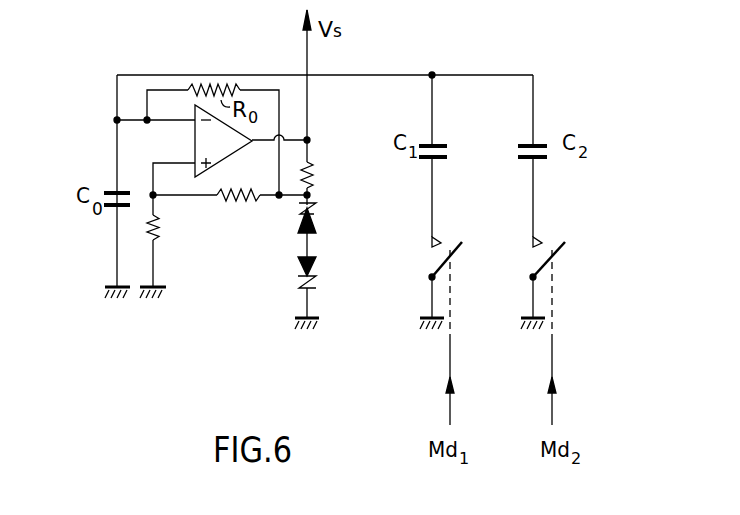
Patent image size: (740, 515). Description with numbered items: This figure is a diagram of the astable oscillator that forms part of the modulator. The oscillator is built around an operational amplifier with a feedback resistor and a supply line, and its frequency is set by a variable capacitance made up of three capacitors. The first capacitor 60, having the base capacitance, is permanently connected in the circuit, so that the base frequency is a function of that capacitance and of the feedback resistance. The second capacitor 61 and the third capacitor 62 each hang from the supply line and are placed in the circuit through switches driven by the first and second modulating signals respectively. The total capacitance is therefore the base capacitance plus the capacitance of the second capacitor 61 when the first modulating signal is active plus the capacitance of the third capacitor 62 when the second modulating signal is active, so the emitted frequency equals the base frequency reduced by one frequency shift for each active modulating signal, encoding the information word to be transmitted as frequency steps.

The capacitor 60 is at (112, 190).
The capacitor 61 is at (437, 143).
The capacitor 62 is at (527, 143).